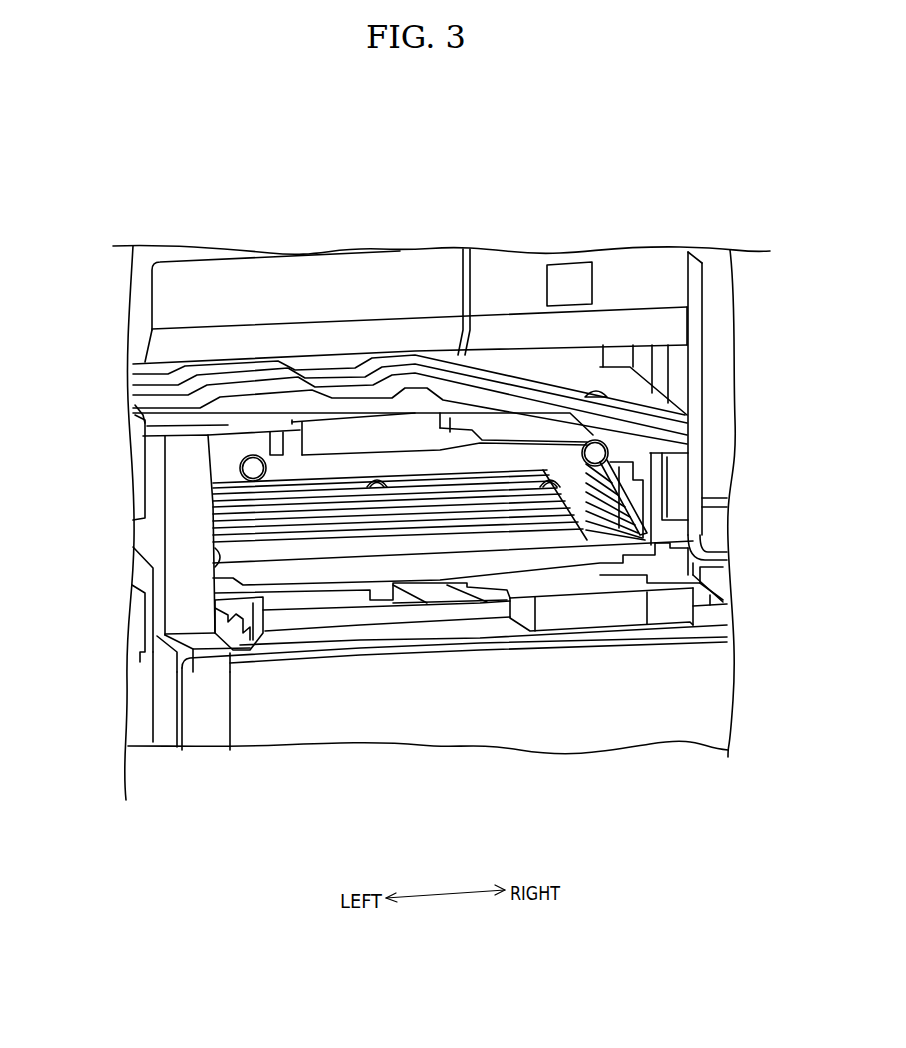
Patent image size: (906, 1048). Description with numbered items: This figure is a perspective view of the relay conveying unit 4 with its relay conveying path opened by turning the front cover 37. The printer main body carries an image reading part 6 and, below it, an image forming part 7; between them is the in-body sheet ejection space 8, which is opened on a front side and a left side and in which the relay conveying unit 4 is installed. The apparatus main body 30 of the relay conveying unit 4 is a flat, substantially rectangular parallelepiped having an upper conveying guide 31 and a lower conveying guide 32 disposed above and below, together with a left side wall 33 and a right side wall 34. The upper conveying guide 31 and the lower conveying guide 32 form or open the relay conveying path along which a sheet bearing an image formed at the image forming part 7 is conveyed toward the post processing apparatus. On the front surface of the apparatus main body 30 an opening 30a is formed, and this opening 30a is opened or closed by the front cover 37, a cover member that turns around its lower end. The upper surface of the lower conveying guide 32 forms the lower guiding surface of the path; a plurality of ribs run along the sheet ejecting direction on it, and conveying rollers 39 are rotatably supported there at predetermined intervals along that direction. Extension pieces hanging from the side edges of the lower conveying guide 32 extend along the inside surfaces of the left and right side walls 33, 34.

The relay conveying unit 4 is at (140, 443).
The image reading part 6 is at (387, 268).
The image forming part 7 is at (385, 723).
The in-body sheet ejection space 8 is at (675, 378).
The apparatus main body 30 is at (146, 467).
The opening 30a is at (215, 575).
The upper conveying guide 31 is at (200, 388).
The lower conveying guide 32 is at (215, 538).
The left side wall 33 is at (180, 550).
The right side wall 34 is at (657, 482).
The front cover 37 is at (330, 622).
The conveying rollers 39 is at (380, 490).